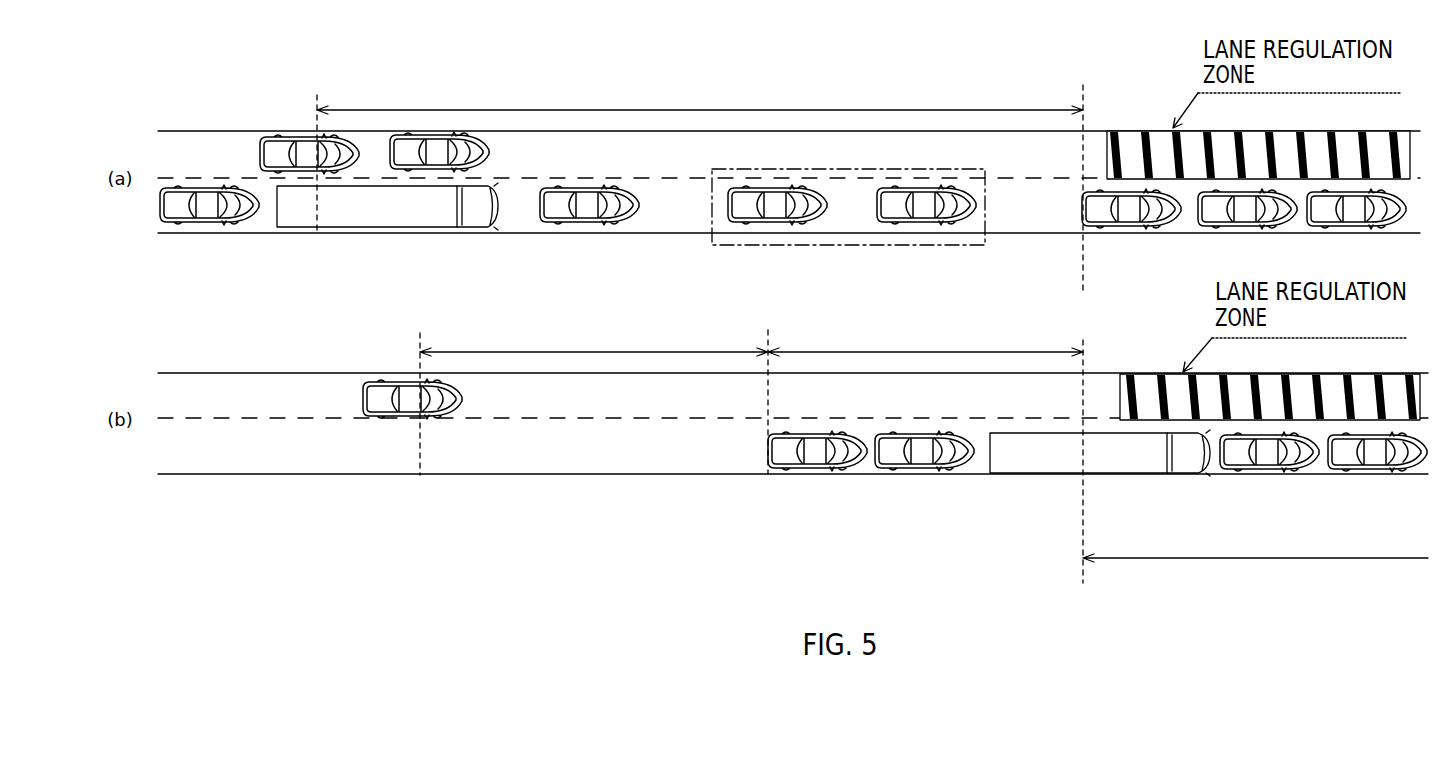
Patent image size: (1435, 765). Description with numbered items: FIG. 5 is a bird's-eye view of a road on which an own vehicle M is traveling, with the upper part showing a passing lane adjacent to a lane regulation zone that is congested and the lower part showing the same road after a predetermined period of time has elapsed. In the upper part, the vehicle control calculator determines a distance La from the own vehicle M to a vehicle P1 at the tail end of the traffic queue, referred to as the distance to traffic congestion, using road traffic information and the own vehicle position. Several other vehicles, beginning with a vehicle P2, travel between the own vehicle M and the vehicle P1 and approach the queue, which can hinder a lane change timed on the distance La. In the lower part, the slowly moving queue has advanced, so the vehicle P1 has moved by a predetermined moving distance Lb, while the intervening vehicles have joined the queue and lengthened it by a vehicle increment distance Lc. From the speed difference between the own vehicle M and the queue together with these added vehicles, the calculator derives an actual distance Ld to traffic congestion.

The own vehicle M is at (296, 134).
The vehicle at the tail end of the traffic queue P1 is at (1126, 228).
The vehicle P2 is at (918, 226).
The distance to traffic congestion La is at (700, 96).
The predetermined moving distance Lb is at (1255, 544).
The vehicle increment distance Lc is at (925, 338).
The actual distance to traffic congestion Ld is at (594, 338).